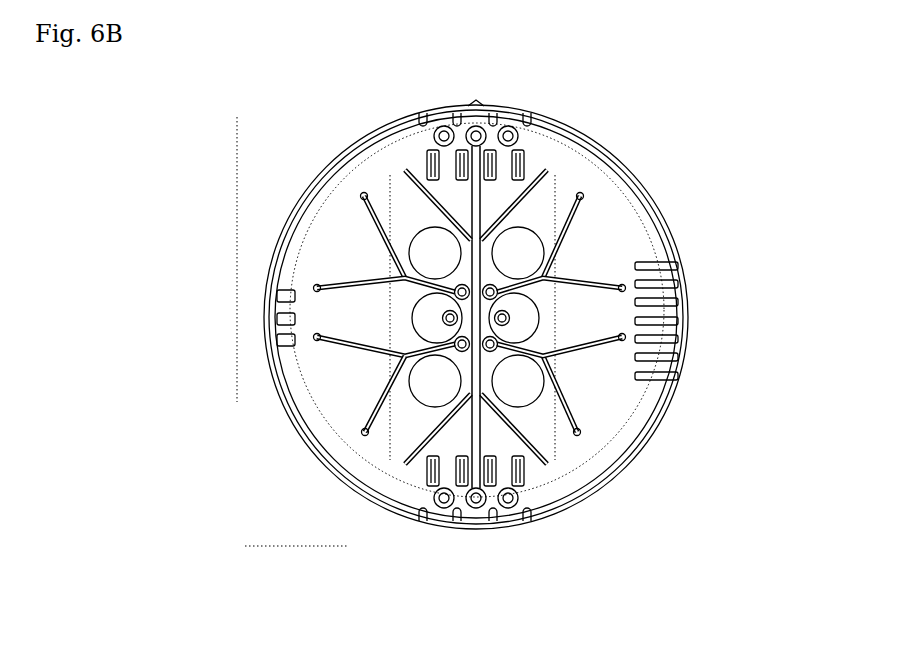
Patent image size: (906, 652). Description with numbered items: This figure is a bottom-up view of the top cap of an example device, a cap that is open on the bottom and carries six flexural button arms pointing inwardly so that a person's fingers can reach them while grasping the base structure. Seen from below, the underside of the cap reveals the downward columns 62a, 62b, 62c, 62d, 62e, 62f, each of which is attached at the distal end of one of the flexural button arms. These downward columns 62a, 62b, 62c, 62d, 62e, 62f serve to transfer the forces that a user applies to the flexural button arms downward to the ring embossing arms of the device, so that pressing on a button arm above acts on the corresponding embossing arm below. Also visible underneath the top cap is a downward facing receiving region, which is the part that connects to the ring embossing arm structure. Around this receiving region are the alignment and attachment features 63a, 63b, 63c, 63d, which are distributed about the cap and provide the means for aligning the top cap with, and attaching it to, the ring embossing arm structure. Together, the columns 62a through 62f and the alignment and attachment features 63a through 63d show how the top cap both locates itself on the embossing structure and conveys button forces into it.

The downward column 62a is at (462, 131).
The downward column 62b is at (398, 170).
The downward column 62c is at (362, 196).
The downward column 62d is at (400, 322).
The downward column 62e is at (445, 316).
The downward column 62f is at (400, 347).
The alignment and attachment feature 63a is at (497, 116).
The alignment and attachment feature 63b is at (272, 318).
The alignment and attachment feature 63c is at (413, 492).
The alignment and attachment feature 63d is at (662, 378).